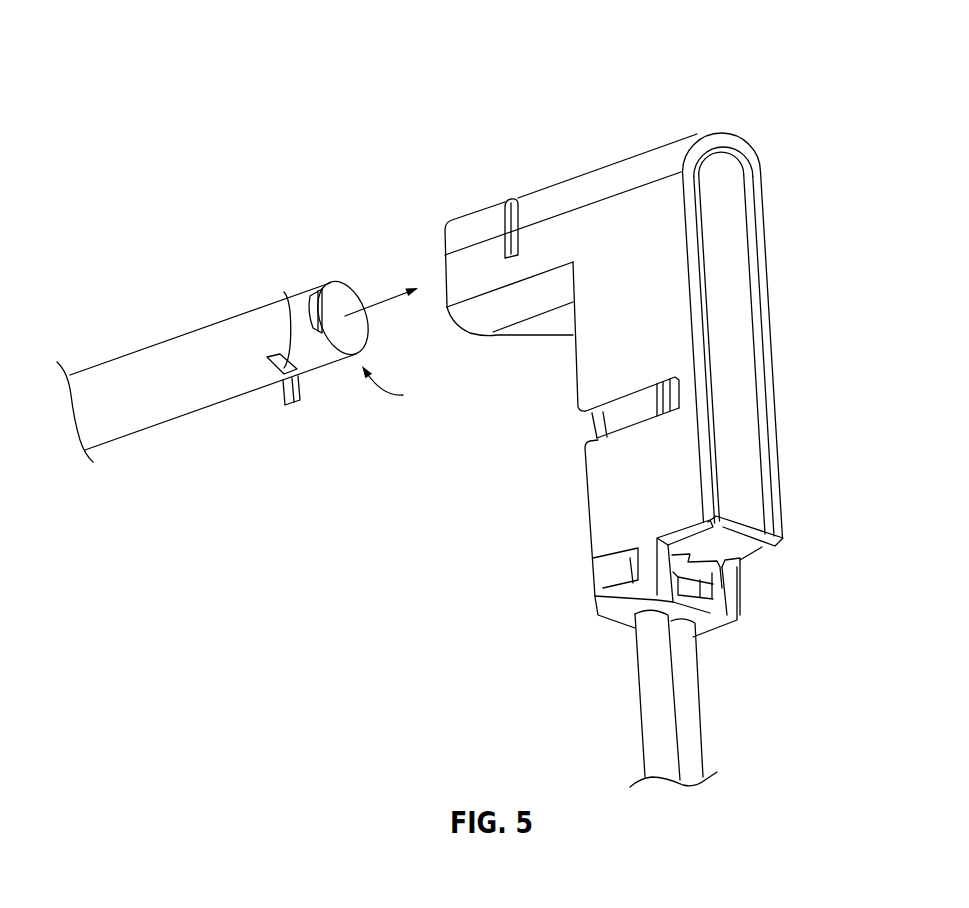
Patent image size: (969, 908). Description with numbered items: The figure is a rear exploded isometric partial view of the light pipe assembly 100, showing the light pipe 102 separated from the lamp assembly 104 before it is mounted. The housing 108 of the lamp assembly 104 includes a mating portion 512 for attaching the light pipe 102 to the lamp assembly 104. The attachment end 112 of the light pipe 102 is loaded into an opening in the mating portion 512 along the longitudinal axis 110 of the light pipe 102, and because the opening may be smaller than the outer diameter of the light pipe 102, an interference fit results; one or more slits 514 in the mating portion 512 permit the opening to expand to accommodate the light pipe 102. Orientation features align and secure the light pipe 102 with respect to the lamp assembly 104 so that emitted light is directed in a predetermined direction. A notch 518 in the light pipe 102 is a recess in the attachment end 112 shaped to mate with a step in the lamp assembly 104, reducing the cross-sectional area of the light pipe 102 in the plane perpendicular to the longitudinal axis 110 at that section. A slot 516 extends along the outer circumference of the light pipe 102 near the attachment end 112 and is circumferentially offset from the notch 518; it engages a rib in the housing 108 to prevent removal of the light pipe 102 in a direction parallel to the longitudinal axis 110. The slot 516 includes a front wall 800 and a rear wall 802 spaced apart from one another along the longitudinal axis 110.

The light pipe assembly 100 is at (382, 78).
The light pipe 102 is at (181, 348).
The lamp assembly 104 is at (818, 746).
The housing 108 is at (648, 205).
The longitudinal axis 110 is at (387, 304).
The attachment end 112 is at (404, 390).
The mating portion 512 is at (530, 193).
The slit 514 is at (512, 246).
The slot 516 is at (294, 405).
The notch 518 is at (323, 303).
The front wall 800 is at (290, 320).
The rear wall 802 is at (274, 372).